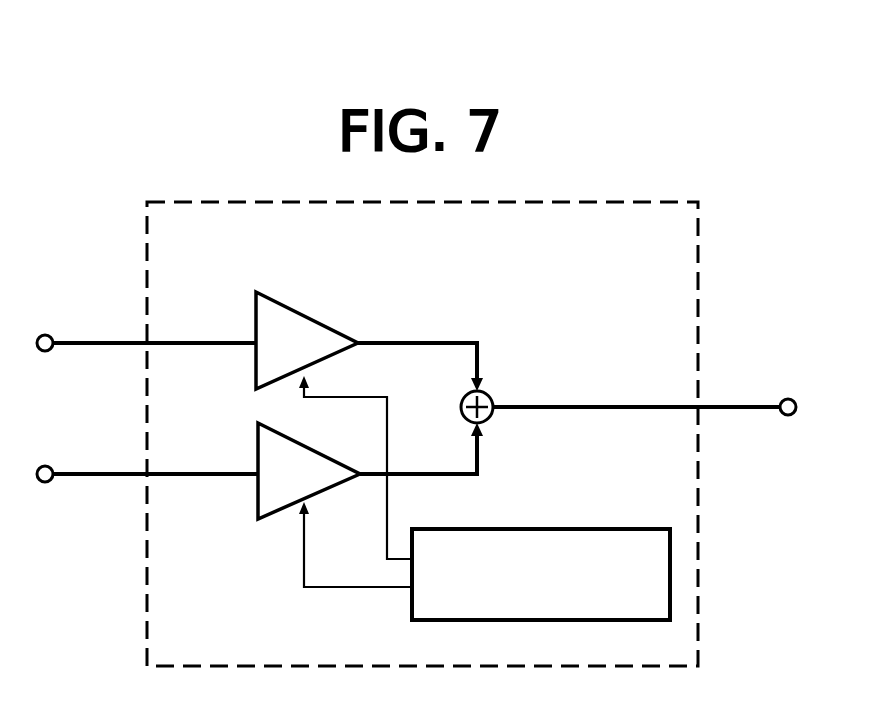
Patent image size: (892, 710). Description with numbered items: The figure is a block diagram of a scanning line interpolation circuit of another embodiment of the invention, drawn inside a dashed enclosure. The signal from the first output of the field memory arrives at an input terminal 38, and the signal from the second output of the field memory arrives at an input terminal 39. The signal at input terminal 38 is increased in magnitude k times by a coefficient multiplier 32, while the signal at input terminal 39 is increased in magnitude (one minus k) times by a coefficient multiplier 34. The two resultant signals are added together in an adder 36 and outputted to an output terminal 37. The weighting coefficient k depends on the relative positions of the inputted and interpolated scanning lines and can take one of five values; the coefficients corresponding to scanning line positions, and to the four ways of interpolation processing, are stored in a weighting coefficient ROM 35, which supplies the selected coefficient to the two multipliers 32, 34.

The coefficient multiplier 32 is at (258, 520).
The coefficient multiplier 34 is at (315, 322).
The weighting coefficient ROM 35 is at (571, 528).
The adder 36 is at (490, 394).
The output terminal 37 is at (785, 399).
The input terminal 38 is at (45, 466).
The input terminal 39 is at (45, 334).